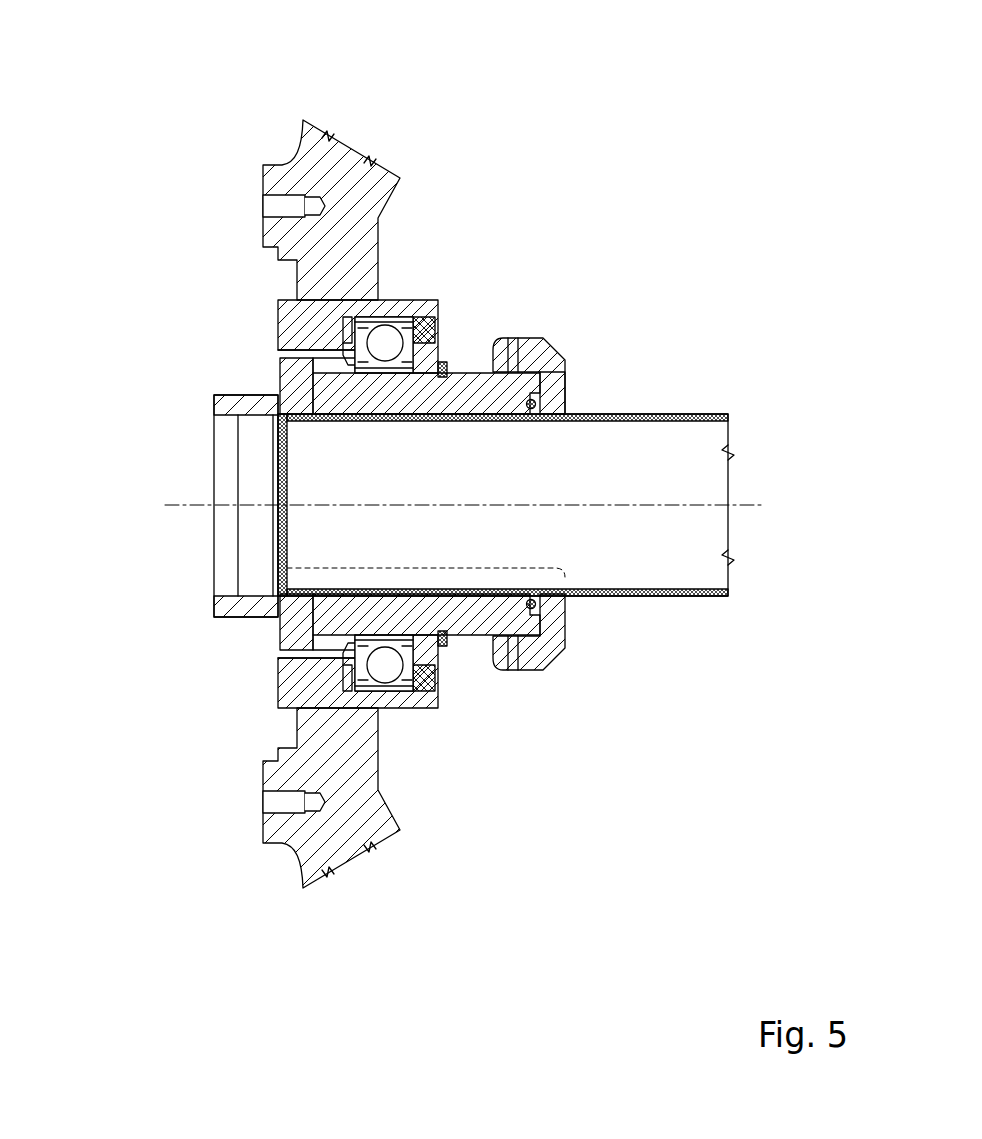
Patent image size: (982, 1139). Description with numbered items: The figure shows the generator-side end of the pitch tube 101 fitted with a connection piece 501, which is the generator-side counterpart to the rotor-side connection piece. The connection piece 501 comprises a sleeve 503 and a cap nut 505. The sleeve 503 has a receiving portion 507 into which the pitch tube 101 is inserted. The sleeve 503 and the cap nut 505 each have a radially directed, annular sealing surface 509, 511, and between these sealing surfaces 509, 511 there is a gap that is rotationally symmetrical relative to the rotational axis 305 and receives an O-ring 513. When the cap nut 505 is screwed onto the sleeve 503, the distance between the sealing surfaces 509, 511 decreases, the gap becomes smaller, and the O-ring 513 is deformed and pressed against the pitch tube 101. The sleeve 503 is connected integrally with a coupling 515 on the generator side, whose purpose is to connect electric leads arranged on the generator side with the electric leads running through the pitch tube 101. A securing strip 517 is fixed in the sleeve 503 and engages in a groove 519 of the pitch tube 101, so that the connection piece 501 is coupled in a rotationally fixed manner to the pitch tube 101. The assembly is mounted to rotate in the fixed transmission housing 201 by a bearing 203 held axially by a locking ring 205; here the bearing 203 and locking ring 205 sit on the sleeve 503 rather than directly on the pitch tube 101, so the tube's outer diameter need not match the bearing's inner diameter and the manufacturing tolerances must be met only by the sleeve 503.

The pitch tube 101 is at (612, 596).
The housing 201 is at (295, 853).
The bearing 203 is at (384, 343).
The locking ring 205 is at (310, 330).
The rotational axis 305 is at (182, 507).
The connection piece 501 is at (484, 371).
The sleeve 503 is at (448, 607).
The cap nut 505 is at (530, 650).
The receiving portion 507 is at (420, 567).
The sealing surface 509 is at (540, 340).
The sealing surface 511 is at (570, 400).
The O-ring 513 is at (567, 620).
The coupling 515 is at (240, 597).
The securing strip 517 is at (278, 363).
The groove 519 is at (278, 397).